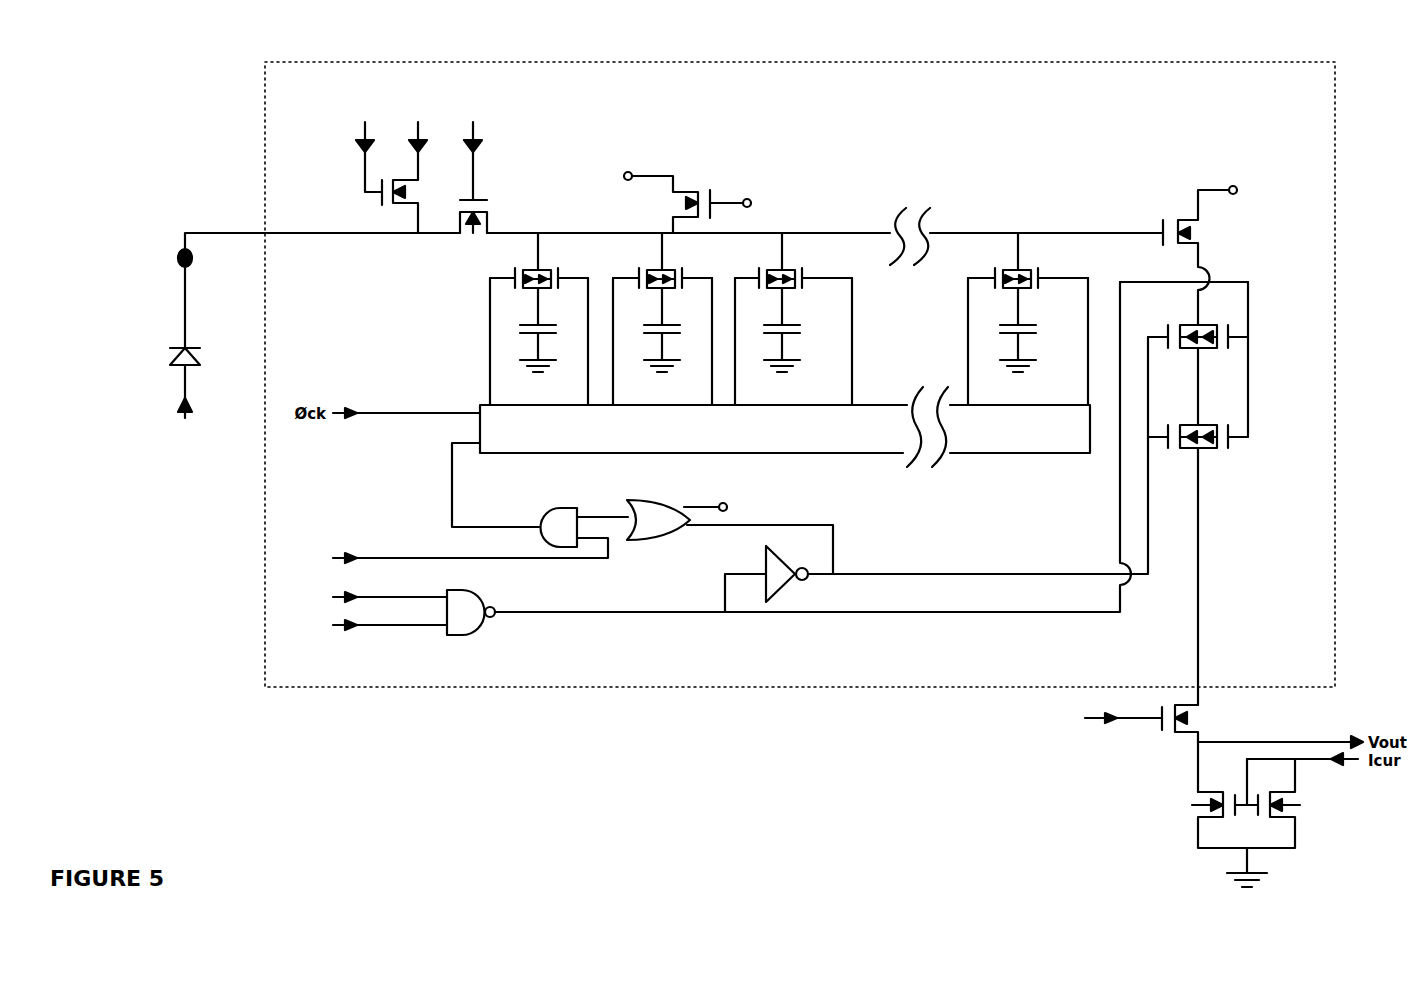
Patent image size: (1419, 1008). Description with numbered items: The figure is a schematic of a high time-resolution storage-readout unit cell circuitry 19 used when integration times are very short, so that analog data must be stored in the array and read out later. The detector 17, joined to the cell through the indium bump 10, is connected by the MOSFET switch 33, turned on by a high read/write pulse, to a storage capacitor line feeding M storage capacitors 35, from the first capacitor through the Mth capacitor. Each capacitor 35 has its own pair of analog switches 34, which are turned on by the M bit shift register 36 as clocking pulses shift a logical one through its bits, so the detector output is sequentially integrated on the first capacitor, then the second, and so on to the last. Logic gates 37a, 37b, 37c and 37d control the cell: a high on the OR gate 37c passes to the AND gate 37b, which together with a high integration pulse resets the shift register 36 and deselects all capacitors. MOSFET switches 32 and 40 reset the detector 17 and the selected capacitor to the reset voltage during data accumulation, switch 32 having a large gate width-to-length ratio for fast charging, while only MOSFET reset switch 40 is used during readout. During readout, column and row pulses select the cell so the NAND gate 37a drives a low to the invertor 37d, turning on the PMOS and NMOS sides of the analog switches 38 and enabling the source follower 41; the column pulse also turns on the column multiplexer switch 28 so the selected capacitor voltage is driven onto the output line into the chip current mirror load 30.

The indium bump 10 is at (175, 266).
The detector 17 is at (168, 360).
The readout unit cell circuitry 19 is at (405, 689).
The column multiplexer switch 28 is at (1187, 718).
The current mirror load 30 is at (1246, 823).
The MOSFET switch 32 is at (405, 192).
The MOSFET switch 33 is at (473, 183).
The analog switches 34 is at (992, 284).
The storage capacitors 35 is at (990, 343).
The M bit shift register 36 is at (857, 453).
The NAND gate 37a is at (485, 625).
The AND gate 37b is at (577, 547).
The OR gate 37c is at (665, 538).
The invertor 37d is at (790, 578).
The analog switches 38 is at (1227, 352).
The MOSFET reset switch 40 is at (686, 203).
The source follower 41 is at (1190, 233).